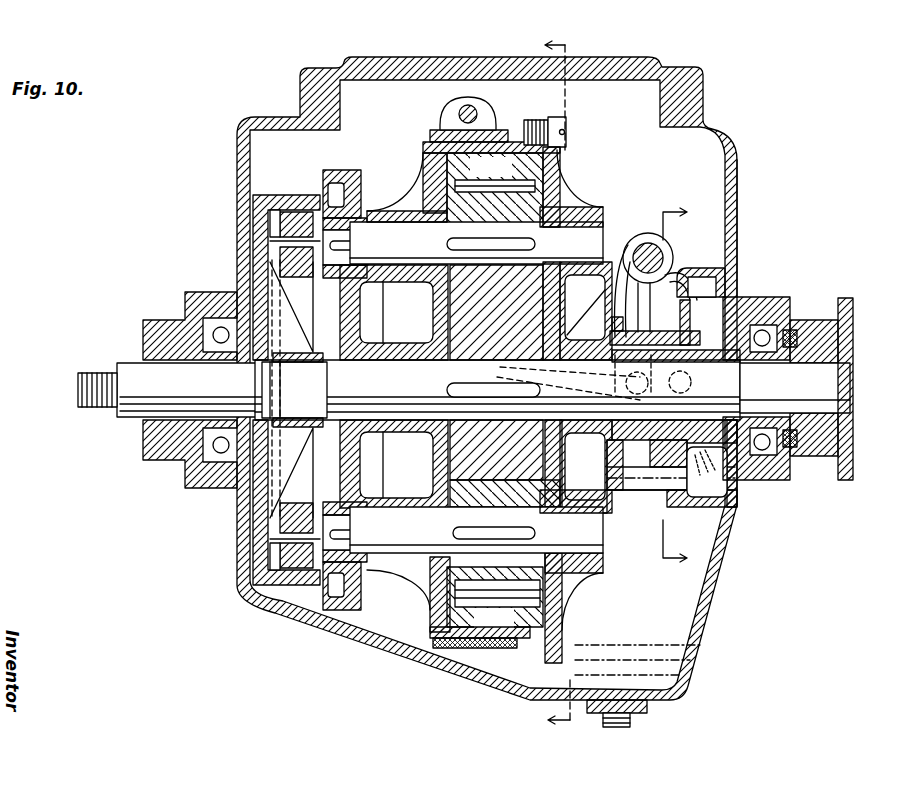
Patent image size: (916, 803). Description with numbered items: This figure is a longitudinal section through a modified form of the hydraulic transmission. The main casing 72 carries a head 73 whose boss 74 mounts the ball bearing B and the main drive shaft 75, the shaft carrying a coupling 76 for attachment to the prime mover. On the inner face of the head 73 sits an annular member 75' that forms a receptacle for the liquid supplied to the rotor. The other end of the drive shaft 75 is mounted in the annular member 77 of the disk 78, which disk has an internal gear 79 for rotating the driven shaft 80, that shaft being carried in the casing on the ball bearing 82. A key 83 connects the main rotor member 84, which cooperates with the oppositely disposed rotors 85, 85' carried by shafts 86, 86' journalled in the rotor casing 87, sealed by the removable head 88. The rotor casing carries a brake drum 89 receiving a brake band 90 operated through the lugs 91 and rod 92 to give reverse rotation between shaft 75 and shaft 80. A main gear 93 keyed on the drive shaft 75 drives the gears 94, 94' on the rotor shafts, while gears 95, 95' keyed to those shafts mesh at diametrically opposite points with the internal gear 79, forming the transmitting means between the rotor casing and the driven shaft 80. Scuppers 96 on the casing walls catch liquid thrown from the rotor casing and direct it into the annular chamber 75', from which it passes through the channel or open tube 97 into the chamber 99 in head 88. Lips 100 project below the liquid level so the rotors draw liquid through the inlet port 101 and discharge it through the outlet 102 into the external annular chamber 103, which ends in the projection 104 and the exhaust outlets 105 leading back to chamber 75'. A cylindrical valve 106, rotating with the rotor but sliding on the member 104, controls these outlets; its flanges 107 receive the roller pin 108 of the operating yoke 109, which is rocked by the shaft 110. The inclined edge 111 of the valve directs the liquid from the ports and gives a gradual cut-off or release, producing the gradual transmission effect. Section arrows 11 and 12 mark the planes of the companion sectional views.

The section line 11- 11 is at (562, 385).
The section line 12- 12 is at (669, 387).
The main casing 72 is at (240, 141).
The head 73 is at (738, 179).
The boss 74 is at (757, 300).
The main drive shaft 75 is at (822, 386).
The annular member 75' is at (736, 267).
The coupling 76 is at (855, 474).
The annular member 77 is at (288, 370).
The disk 78 is at (253, 236).
The internal gear 79 is at (290, 210).
The driven shaft 80 is at (127, 368).
The ball bearing 82 is at (217, 327).
The key 83 is at (440, 371).
The main rotor member 84 is at (445, 322).
The rotor 85 is at (495, 597).
The rotor 85' is at (495, 188).
The shaft 86 is at (476, 530).
The shaft 86' is at (476, 243).
The rotor casing 87 is at (430, 603).
The removable head 88 is at (562, 608).
The brake drum 89 is at (440, 612).
The brake band 90 is at (465, 650).
The lugs 91 is at (496, 128).
The rod 92 is at (458, 113).
The main gear 93 is at (294, 390).
The gear 94 is at (332, 584).
The gear 94' is at (361, 212).
The gear 95 is at (264, 594).
The gear 95' is at (311, 188).
The scuppers 96 is at (495, 372).
The channel or open tube 97 is at (665, 492).
The chamber 99 is at (610, 497).
The lips 100 is at (586, 466).
The inlet port 101 is at (505, 506).
The outlet 102 is at (557, 328).
The external annular chamber 103 is at (610, 354).
The projection 104 is at (688, 450).
The exhaust outlets 105 is at (700, 345).
The valve 106 is at (643, 331).
The flanges 107 is at (617, 300).
The roller pin 108 is at (658, 379).
The operating yoke 109 is at (675, 282).
The shaft 110 is at (655, 256).
The inclined edge 111 is at (688, 328).
The ball bearing B is at (765, 326).